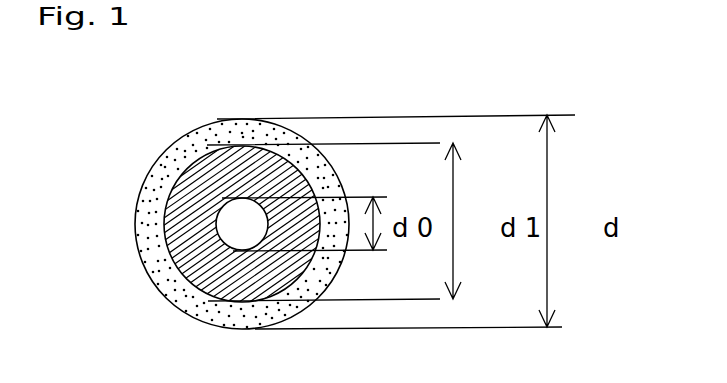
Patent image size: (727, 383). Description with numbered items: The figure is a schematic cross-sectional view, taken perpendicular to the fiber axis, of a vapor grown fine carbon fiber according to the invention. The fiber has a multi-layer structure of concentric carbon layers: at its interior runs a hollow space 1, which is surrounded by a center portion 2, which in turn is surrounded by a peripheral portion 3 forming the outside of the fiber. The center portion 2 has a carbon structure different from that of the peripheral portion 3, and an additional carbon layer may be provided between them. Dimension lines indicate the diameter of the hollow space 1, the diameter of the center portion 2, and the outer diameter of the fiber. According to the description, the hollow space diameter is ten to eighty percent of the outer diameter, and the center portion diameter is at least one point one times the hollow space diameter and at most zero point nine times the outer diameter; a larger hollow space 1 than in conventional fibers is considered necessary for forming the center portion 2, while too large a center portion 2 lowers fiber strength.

The hollow space 1 is at (228, 224).
The center portion 2 is at (223, 178).
The peripheral portion 3 is at (158, 280).